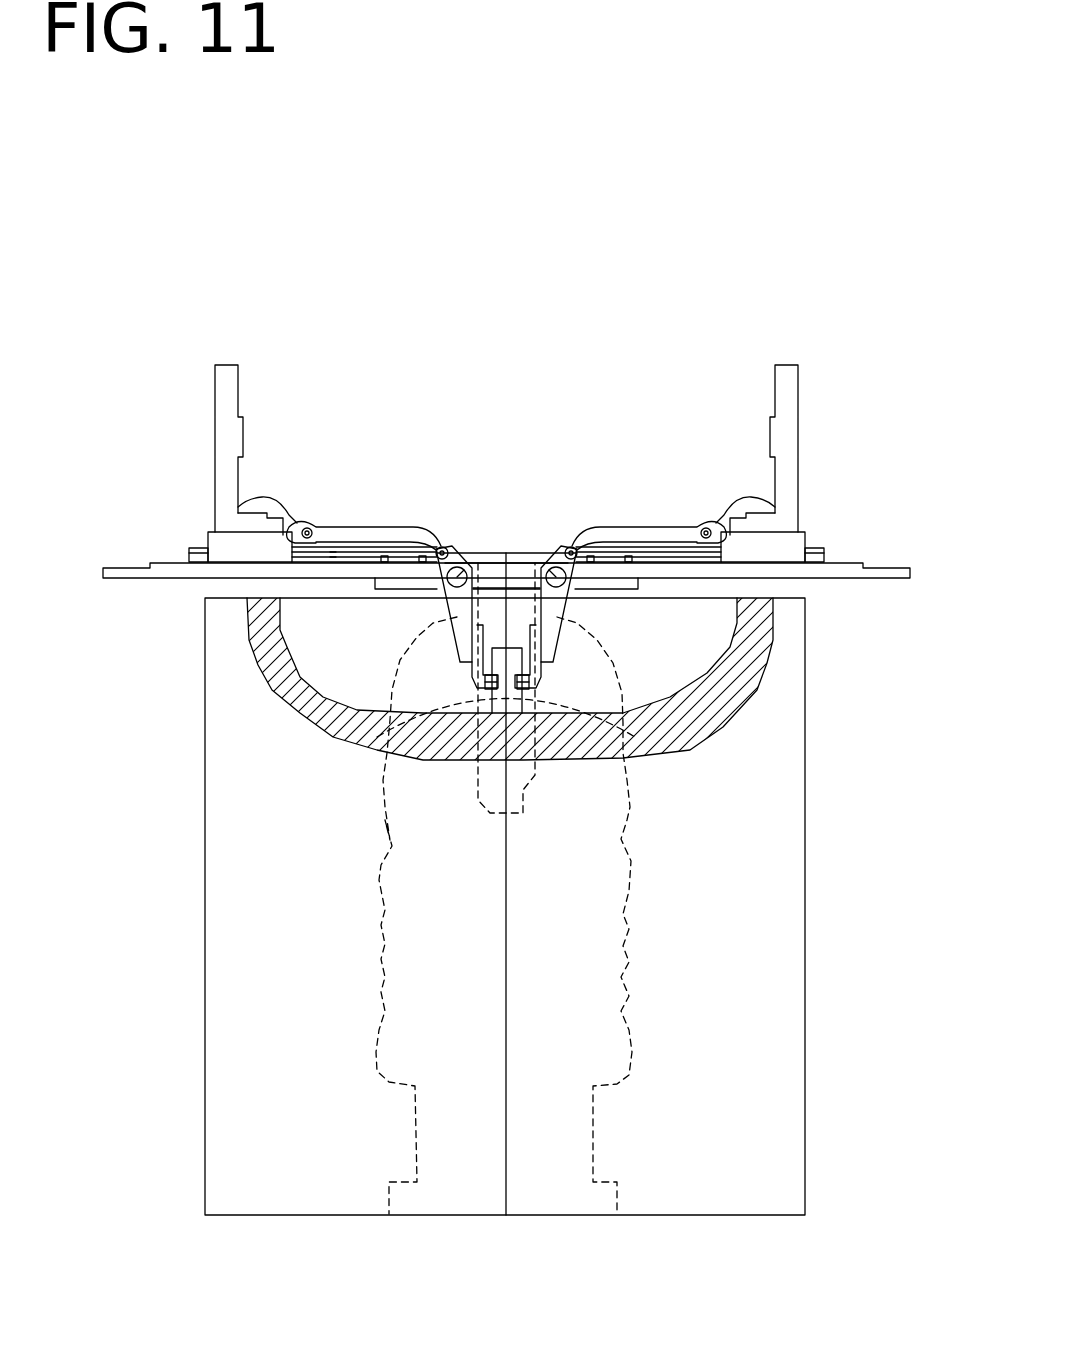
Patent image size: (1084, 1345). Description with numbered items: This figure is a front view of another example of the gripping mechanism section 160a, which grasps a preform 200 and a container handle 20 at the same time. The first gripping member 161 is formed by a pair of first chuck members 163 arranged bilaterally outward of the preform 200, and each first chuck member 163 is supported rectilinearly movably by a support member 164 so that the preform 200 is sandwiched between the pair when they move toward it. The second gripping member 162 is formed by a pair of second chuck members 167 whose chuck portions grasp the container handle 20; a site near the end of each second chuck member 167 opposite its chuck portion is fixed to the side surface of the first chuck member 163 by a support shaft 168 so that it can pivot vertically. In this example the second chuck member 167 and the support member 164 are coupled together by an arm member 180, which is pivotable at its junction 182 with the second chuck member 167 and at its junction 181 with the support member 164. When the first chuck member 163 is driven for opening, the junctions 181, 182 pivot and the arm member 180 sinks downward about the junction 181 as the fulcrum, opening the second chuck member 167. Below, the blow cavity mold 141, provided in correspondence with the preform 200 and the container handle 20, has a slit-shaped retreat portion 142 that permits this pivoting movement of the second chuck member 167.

The gripping mechanism section 160a is at (690, 230).
The blow cavity mold 141 is at (764, 992).
The retreat portion 142 is at (680, 643).
The preform 200 is at (350, 754).
The container handle 20 is at (507, 700).
The second chuck member 167 is at (503, 617).
The second gripping member 162 is at (452, 617).
The support shaft 168 is at (457, 575).
The junction 182 is at (445, 545).
The arm member 180 is at (380, 532).
The junction 181 is at (277, 499).
The first chuck member 163 is at (506, 499).
The first gripping member 161 is at (335, 568).
The support member 164 is at (227, 398).